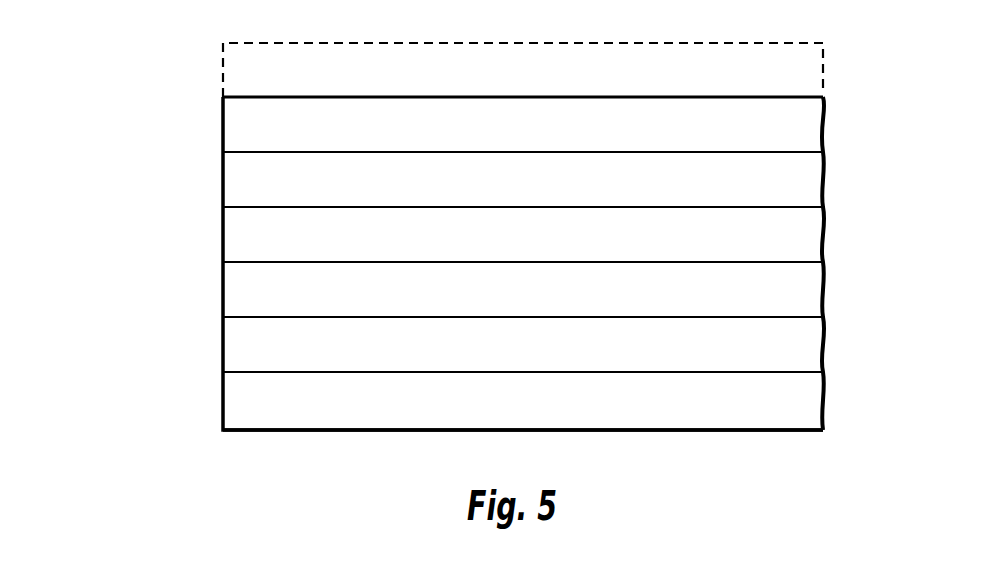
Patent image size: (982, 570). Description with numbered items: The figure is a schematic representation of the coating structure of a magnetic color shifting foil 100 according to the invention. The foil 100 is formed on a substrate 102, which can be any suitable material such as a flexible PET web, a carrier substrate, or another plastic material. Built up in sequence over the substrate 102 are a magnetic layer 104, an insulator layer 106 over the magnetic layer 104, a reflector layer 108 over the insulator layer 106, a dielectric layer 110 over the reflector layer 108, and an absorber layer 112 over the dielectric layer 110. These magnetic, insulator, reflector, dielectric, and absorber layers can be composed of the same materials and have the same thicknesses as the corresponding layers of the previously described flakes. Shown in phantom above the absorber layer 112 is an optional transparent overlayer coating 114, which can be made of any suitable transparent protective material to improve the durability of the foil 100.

The color shifting foil 100 is at (167, 268).
The substrate 102 is at (797, 407).
The magnetic layer 104 is at (797, 350).
The insulator layer 106 is at (797, 295).
The reflector layer 108 is at (797, 242).
The dielectric layer 110 is at (797, 190).
The absorber layer 112 is at (797, 134).
The transparent overlayer coating 114 is at (800, 84).